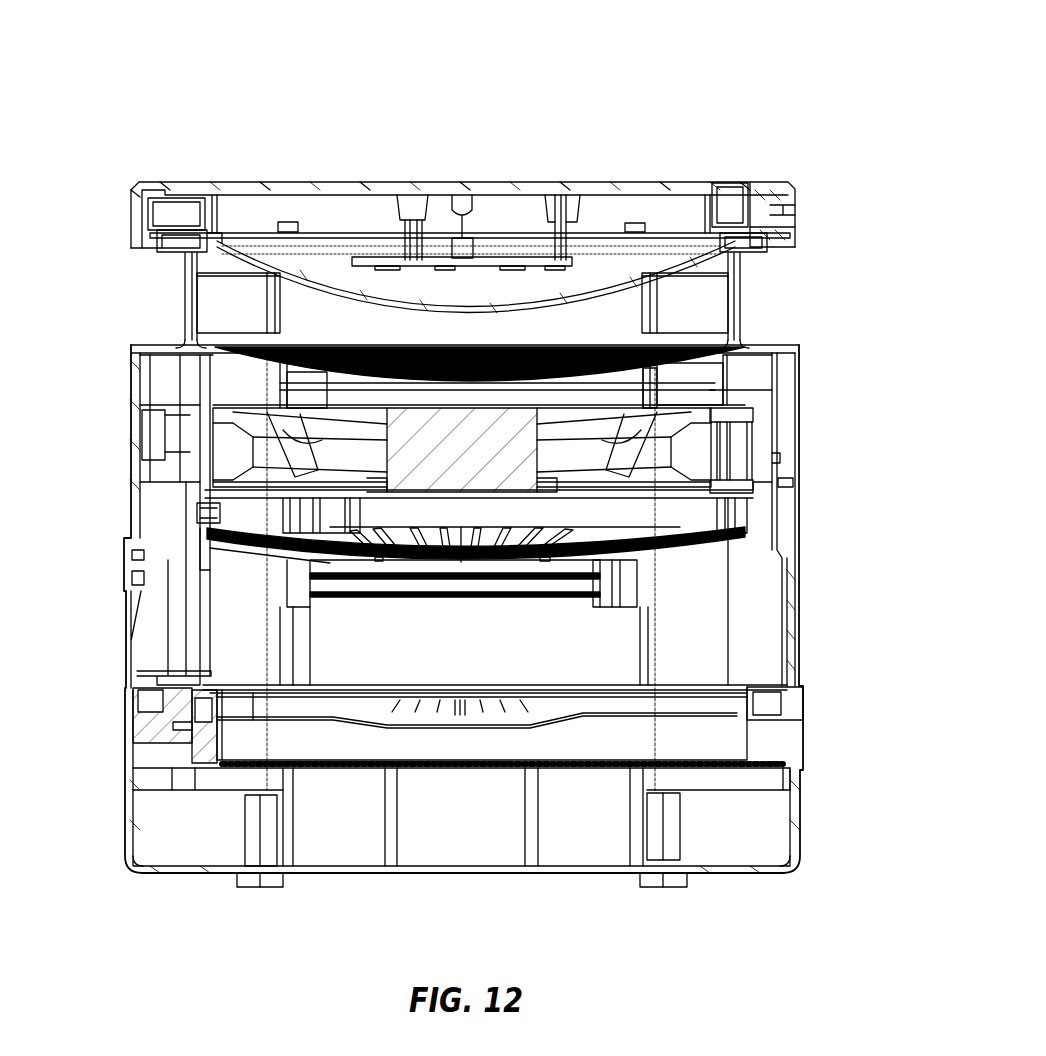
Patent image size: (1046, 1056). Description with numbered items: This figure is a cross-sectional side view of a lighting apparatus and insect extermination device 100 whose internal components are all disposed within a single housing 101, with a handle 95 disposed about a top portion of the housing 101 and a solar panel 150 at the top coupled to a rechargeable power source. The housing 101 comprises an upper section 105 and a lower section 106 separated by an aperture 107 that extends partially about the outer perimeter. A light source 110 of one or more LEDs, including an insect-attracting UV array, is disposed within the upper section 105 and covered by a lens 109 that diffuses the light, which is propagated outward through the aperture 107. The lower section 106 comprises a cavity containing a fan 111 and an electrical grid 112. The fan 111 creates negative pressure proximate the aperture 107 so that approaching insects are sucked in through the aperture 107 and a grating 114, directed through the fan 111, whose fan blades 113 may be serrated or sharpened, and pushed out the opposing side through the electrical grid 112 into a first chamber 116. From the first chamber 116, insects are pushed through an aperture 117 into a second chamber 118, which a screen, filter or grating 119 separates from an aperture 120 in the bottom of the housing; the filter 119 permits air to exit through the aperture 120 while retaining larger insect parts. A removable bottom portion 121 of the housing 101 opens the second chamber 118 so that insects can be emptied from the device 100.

The lighting apparatus and insect extermination device 100 is at (129, 84).
The handle 95 is at (783, 204).
The upper section 105 is at (133, 218).
The aperture 107 is at (758, 270).
The lens 109 is at (643, 285).
The light source 110 is at (447, 262).
The solar panel 150 is at (494, 182).
The grating 114 is at (256, 335).
The fan 111 is at (510, 425).
The fan blades 113 is at (293, 428).
The lower section 106 is at (133, 495).
The housing 101 is at (802, 494).
The electrical grid 112 is at (640, 577).
The first chamber 116 is at (613, 643).
The aperture 117 is at (468, 682).
The second chamber 118 is at (710, 738).
The screen, filter or grating 119 is at (354, 767).
The aperture 120 is at (803, 838).
The bottom portion 121 is at (459, 844).